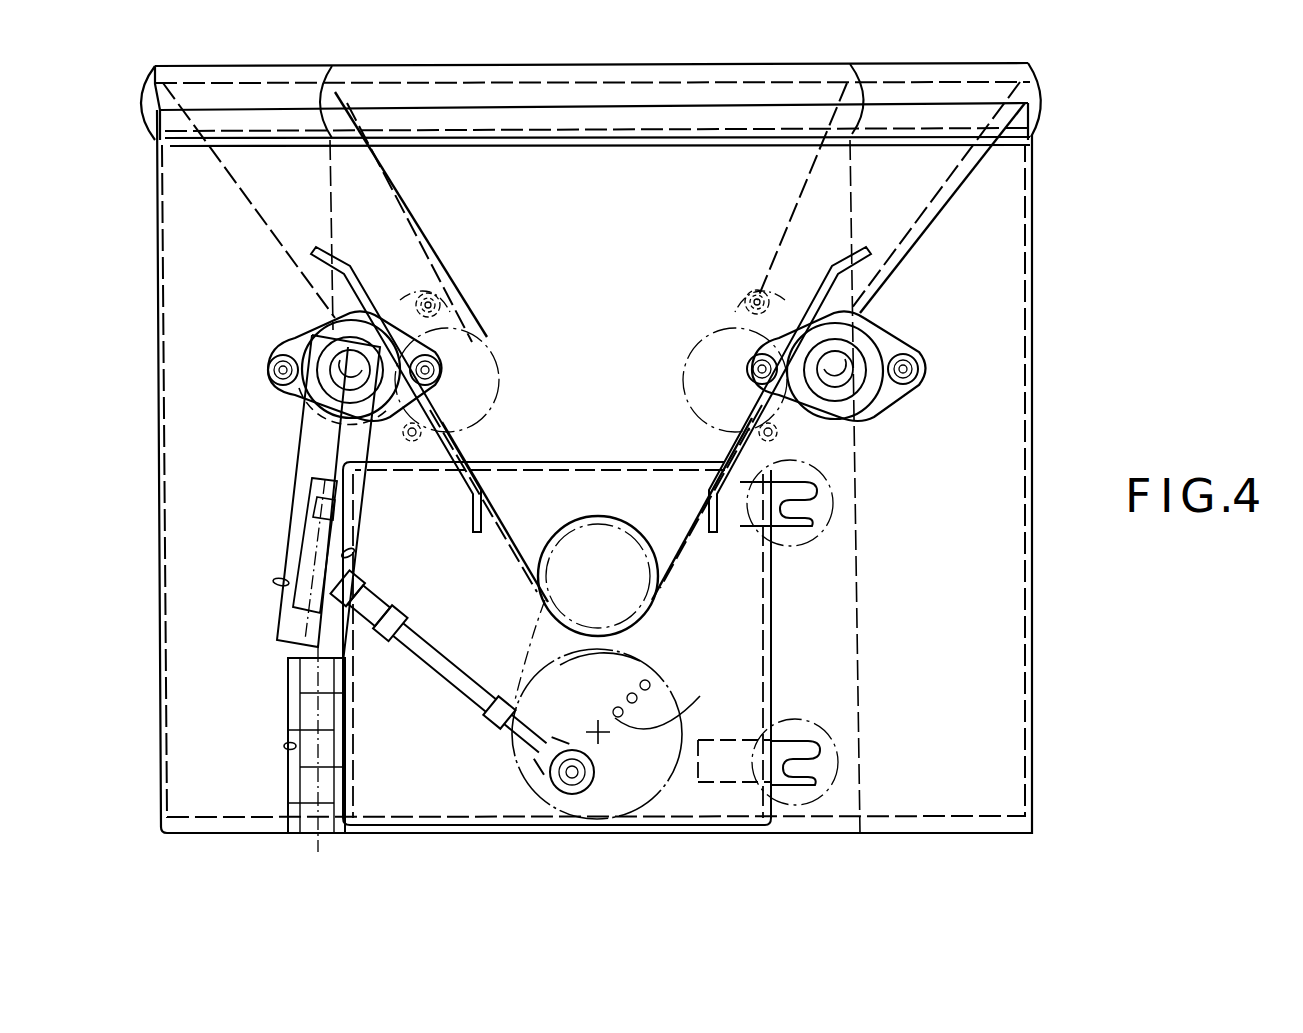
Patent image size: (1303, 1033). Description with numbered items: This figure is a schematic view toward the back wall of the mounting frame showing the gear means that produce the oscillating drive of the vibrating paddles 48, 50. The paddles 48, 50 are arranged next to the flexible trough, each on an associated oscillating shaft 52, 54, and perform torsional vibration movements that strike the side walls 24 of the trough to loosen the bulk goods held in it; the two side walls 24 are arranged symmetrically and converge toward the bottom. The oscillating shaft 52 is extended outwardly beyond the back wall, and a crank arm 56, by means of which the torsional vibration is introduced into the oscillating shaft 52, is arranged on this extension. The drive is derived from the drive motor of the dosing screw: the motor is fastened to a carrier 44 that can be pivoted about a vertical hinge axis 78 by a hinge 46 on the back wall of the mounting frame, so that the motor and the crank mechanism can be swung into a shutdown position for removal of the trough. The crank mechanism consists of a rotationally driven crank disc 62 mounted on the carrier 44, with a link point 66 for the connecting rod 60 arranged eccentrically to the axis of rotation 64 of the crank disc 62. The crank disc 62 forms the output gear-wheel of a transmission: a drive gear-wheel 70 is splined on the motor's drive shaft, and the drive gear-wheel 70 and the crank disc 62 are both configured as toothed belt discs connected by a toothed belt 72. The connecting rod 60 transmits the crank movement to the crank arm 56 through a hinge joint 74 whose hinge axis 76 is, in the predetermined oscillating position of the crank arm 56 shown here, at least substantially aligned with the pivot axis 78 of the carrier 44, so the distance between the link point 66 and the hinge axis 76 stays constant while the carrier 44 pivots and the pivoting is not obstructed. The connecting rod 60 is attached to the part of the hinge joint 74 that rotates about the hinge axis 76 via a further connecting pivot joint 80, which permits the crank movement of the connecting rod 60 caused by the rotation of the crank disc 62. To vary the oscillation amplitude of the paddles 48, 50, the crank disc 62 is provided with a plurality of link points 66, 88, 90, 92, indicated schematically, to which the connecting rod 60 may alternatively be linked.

The side walls 24 is at (270, 228).
The carrier 44 is at (755, 582).
The hinge 46 is at (284, 745).
The vibrating paddle 48 is at (348, 262).
The vibrating paddle 50 is at (843, 262).
The oscillating shaft 52 is at (345, 376).
The oscillating shaft 54 is at (840, 372).
The crank arm 56 is at (303, 433).
The connecting rod 60 is at (437, 674).
The crank disc 62 is at (673, 773).
The axis of rotation 64 is at (602, 740).
The link point 66 is at (562, 796).
The drive gear-wheel 70 is at (583, 540).
The toothed belt 72 is at (528, 650).
The hinge joint 74 is at (273, 580).
The hinge axis 76 is at (310, 460).
The hinge axis 78 is at (313, 715).
The connecting pivot joint 80 is at (355, 550).
The link point 88 is at (642, 684).
The link point 90 is at (652, 684).
The link point 92 is at (690, 702).